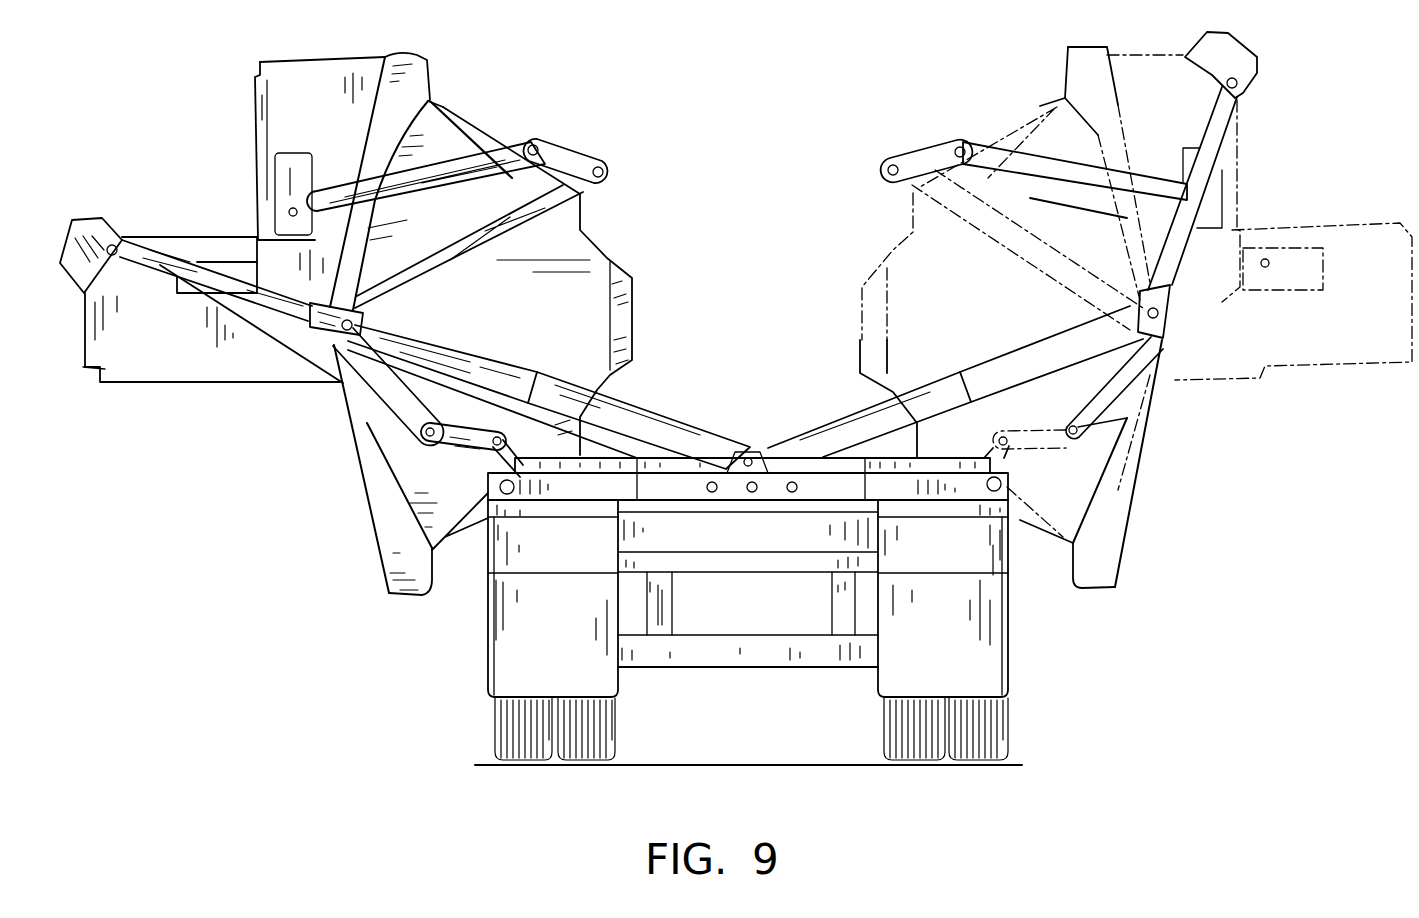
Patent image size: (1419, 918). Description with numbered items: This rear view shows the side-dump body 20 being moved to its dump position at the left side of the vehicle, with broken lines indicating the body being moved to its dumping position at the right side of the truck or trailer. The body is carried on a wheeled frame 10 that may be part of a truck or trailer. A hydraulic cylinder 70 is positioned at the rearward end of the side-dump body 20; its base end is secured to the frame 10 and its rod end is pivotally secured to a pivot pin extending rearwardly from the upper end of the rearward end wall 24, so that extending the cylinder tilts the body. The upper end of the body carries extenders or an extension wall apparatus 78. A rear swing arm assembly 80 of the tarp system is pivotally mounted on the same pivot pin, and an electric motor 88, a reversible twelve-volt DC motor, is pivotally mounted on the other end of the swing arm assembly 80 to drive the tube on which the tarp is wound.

The wheeled frame 10 is at (452, 659).
The side-dump body 20 is at (556, 262).
The rearward end wall 24 is at (480, 315).
The hydraulic cylinder 70 is at (640, 413).
The extension wall apparatus 78 is at (262, 352).
The rear swing arm assembly 80 is at (168, 243).
The electric motor 88 is at (95, 216).